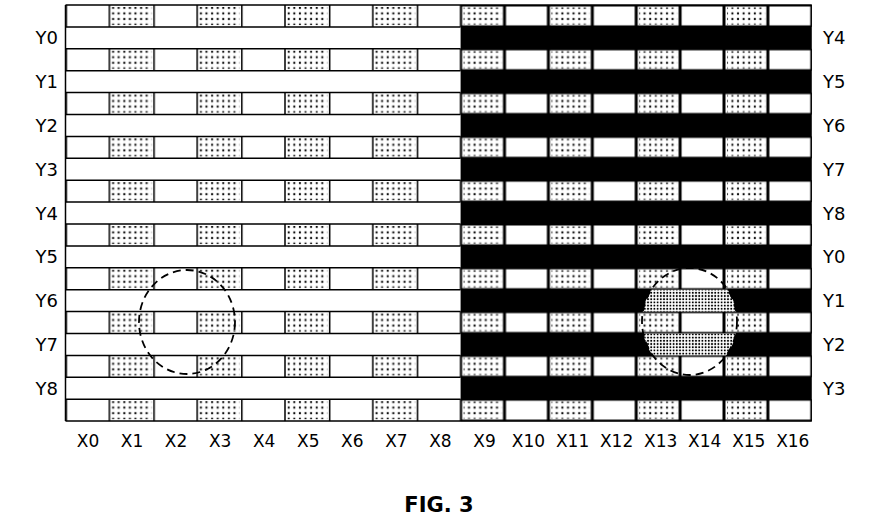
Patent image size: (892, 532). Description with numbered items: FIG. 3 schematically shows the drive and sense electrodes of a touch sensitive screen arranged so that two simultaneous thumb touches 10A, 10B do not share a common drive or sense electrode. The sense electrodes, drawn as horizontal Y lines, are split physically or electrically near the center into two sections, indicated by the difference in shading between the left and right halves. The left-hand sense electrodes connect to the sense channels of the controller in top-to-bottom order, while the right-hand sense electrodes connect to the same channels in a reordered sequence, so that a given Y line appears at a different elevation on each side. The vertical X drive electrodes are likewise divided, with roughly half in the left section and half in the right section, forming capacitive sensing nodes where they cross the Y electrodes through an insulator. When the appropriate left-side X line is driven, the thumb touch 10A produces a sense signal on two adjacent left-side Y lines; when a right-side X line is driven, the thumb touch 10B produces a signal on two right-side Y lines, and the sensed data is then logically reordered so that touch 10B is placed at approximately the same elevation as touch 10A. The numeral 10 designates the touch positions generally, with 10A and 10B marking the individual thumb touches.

The display pixel array 10 is at (438, 213).
The thumb touch 10A is at (142, 343).
The thumb touch 10B is at (766, 356).